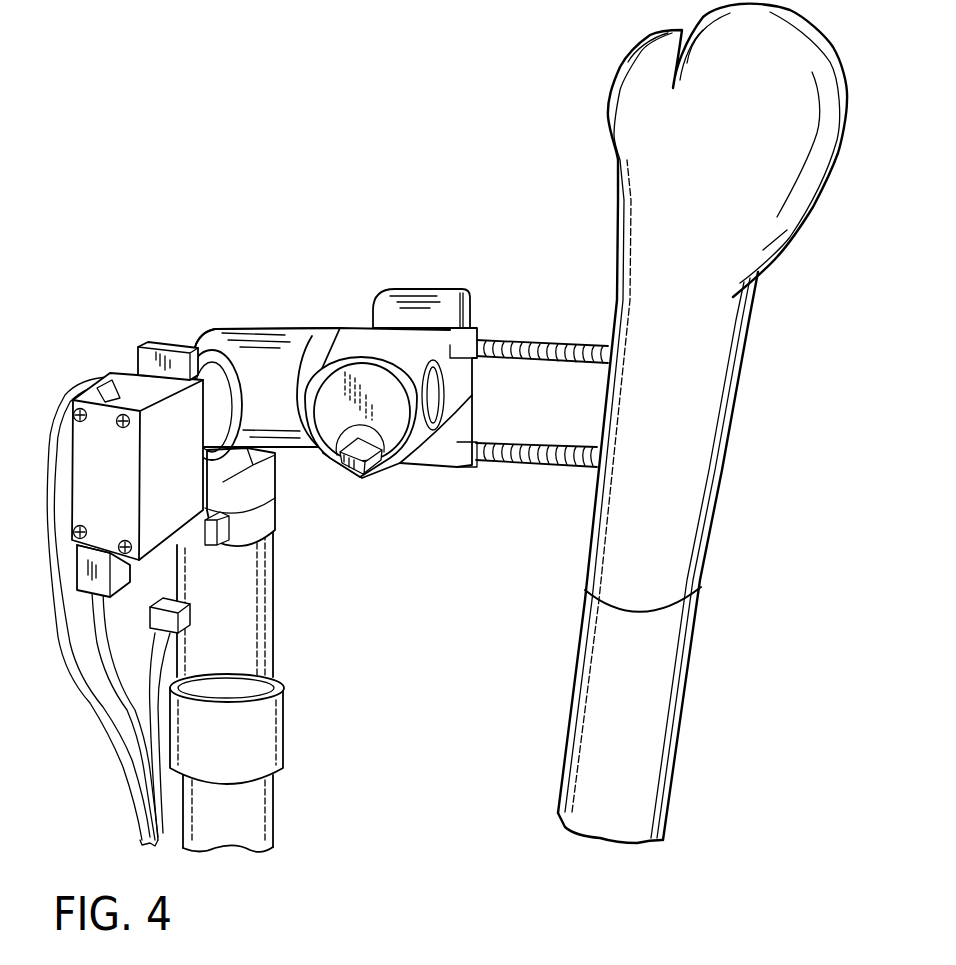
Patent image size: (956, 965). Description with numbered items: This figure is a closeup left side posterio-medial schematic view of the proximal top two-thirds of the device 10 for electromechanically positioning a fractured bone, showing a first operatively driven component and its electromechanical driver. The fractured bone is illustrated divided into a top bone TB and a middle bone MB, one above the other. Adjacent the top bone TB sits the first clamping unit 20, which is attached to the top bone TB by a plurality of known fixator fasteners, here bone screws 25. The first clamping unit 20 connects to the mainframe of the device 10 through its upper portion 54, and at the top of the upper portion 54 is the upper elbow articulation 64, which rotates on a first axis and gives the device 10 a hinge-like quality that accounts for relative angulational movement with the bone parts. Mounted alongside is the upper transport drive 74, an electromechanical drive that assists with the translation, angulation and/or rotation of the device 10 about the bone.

The device 10 is at (312, 638).
The first clamping unit 20 is at (383, 310).
The bone screws 25 is at (543, 343).
The upper portion 54 is at (208, 639).
The upper elbow articulation 64 is at (238, 333).
The upper transport drive 74 is at (85, 484).
The top bone TB is at (633, 566).
The middle bone MB is at (605, 723).